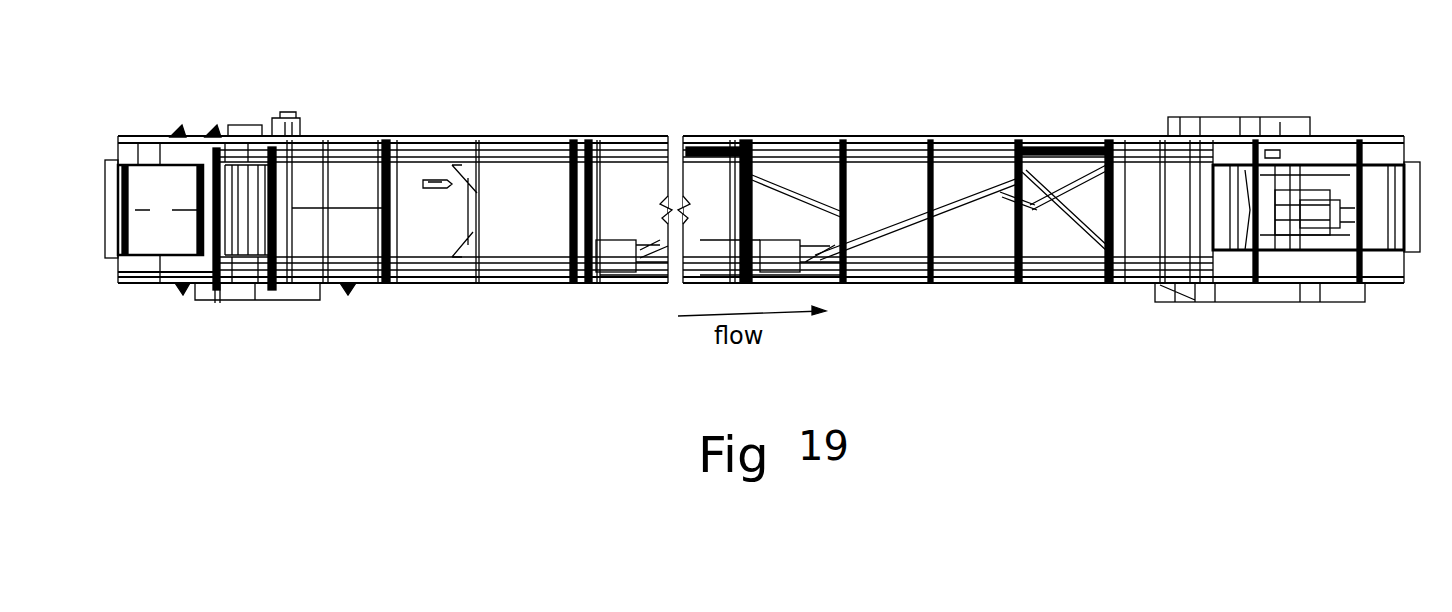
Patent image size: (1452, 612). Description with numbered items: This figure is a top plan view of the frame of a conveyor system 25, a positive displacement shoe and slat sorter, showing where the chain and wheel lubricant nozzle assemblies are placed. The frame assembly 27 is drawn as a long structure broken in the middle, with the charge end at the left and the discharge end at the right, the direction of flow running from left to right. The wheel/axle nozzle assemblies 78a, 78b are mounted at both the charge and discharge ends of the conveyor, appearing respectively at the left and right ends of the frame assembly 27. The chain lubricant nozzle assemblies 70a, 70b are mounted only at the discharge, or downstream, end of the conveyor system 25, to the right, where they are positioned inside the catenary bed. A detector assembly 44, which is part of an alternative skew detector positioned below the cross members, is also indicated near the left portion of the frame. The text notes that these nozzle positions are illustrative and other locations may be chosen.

The conveyor system 25 is at (850, 138).
The frame assembly 27 is at (628, 136).
The detector assembly 44 is at (478, 190).
The wheel/axle nozzle assembly 78a is at (343, 290).
The wheel/axle nozzle assembly 78b is at (1057, 290).
The chain lubricant nozzle assembly 70a is at (1100, 262).
The chain lubricant nozzle assembly 70b is at (1086, 105).